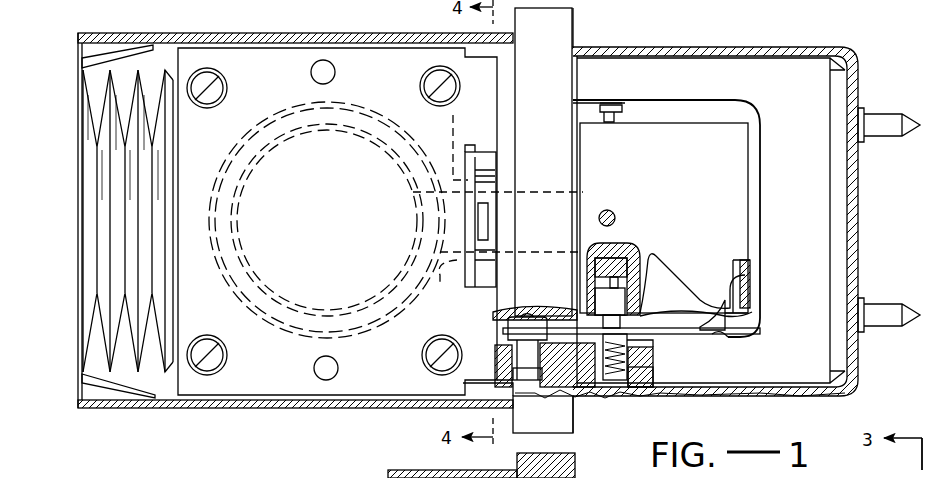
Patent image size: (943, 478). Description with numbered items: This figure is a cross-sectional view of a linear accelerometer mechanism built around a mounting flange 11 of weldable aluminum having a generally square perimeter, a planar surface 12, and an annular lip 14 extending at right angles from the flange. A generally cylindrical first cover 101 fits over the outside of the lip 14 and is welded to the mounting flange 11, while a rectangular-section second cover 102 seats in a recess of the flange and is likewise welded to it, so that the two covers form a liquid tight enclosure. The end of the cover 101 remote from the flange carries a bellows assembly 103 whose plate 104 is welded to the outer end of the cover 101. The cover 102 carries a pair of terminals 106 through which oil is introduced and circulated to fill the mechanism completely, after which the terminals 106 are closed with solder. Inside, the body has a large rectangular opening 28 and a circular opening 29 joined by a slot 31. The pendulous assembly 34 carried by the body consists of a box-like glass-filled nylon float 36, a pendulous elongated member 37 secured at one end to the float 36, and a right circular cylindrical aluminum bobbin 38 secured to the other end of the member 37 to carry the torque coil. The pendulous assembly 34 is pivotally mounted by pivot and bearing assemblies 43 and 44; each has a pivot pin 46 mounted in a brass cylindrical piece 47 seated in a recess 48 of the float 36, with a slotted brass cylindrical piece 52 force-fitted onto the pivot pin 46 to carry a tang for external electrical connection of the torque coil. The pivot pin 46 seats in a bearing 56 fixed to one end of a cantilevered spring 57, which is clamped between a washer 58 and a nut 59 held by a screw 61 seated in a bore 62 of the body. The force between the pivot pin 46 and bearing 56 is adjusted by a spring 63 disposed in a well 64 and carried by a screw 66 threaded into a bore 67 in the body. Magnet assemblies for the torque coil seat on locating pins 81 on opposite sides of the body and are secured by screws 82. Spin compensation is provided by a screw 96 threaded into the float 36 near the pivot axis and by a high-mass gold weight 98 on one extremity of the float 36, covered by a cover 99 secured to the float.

The mounting flange 11 is at (570, 432).
The planar parallel surface 12 is at (575, 80).
The annular lip 14 is at (500, 385).
The large rectangular opening 28 is at (733, 332).
The circular opening 29 is at (290, 340).
The slot 31 is at (432, 312).
The pendulous assembly 34 is at (683, 123).
The float 36 is at (738, 193).
The pendulous elongated member 37 is at (515, 190).
The bobbin 38 is at (250, 316).
The pivot and bearing assembly 43 is at (636, 108).
The pivot and bearing assembly 44 is at (720, 327).
The pivot pin 46 is at (636, 290).
The cylindrical piece 47 is at (627, 260).
The recess 48 is at (625, 248).
The cylindrical piece 52 is at (618, 300).
The bearing 56 is at (652, 320).
The cantilevered spring 57 is at (560, 336).
The washer 58 is at (508, 330).
The nut 59 is at (538, 320).
The screw 61 is at (505, 372).
The bore 62 is at (528, 376).
The spring 63 is at (640, 353).
The well 64 is at (645, 366).
The screw 66 is at (628, 380).
The bore 67 is at (603, 382).
The locating pin 81 is at (323, 62).
The screw 82 is at (218, 78).
The screw 96 is at (608, 210).
The weight 98 is at (735, 283).
The cover 99 is at (748, 304).
The first cover 101 is at (190, 35).
The second cover 102 is at (712, 46).
The bellows assembly 103 is at (104, 200).
The plate 104 is at (92, 62).
The terminals 106 is at (882, 122).